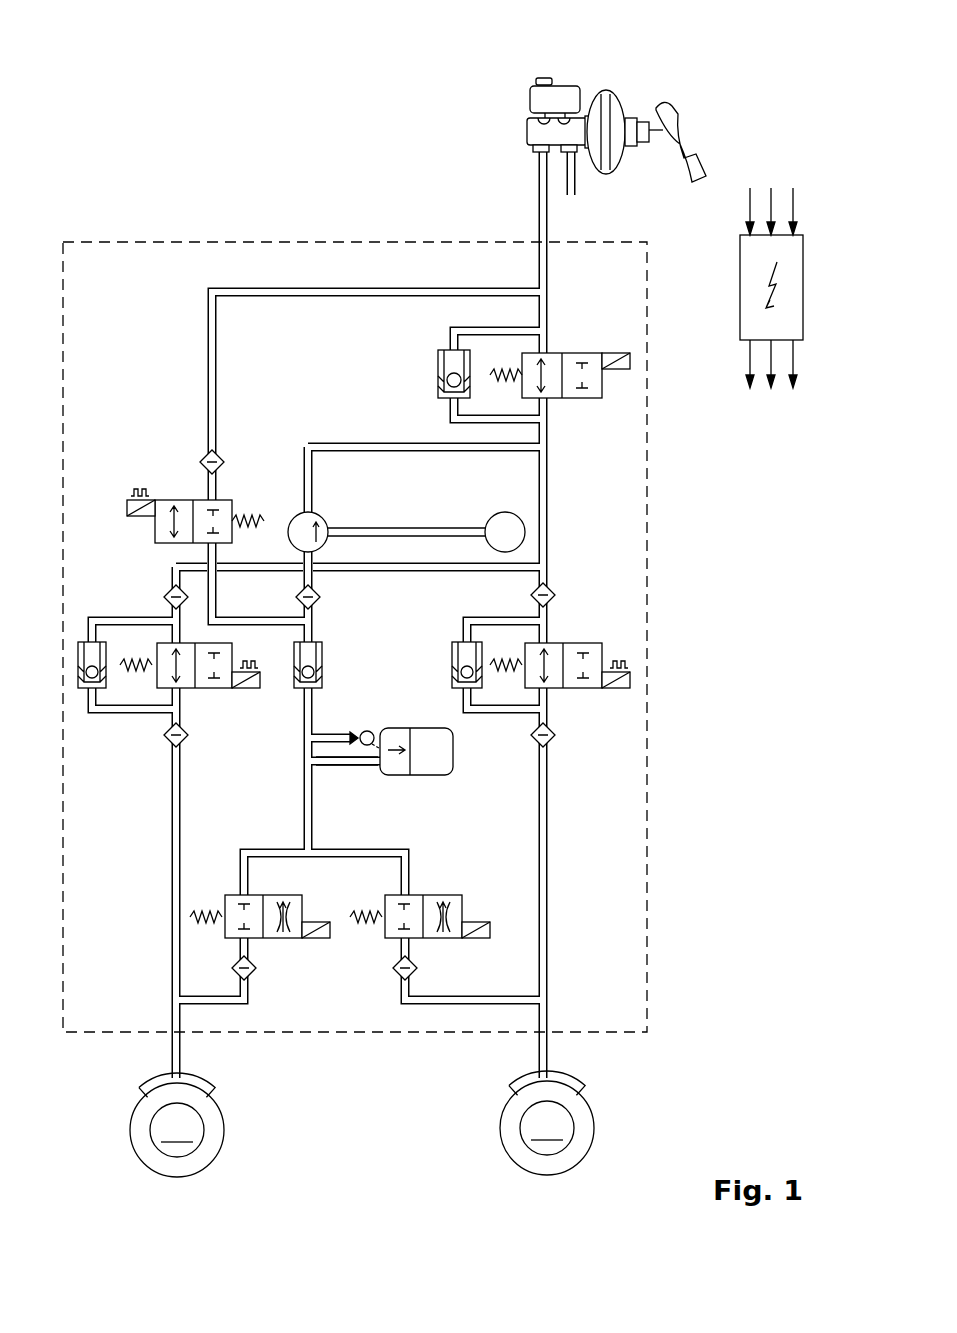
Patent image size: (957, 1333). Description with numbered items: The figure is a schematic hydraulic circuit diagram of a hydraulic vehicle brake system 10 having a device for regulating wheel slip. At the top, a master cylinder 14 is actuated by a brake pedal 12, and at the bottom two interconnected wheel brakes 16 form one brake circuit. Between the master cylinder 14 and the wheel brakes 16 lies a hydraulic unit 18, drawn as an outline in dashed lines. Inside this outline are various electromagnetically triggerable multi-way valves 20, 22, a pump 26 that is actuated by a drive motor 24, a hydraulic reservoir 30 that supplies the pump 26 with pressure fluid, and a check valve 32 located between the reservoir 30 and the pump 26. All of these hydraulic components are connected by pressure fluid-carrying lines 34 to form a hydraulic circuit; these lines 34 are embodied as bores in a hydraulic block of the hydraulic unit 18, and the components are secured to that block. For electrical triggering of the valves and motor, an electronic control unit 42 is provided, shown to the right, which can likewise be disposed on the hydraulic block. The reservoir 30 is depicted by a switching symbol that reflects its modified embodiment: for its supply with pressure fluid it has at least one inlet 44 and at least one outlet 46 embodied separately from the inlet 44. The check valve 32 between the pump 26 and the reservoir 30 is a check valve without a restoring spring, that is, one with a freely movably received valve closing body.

The hydraulic vehicle brake system 10 is at (272, 95).
The brake pedal 12 is at (668, 152).
The master cylinder 14 is at (540, 136).
The wheel brakes 16 is at (188, 1088).
The hydraulic unit 18 is at (191, 240).
The multi-way valve 20 is at (568, 399).
The multi-way valves 22 is at (166, 510).
The drive motor 24 is at (498, 514).
The pump 26 is at (320, 518).
The hydraulic reservoir 30 is at (430, 765).
The check valve 32 is at (325, 652).
The lines 34 is at (337, 297).
The electronic control unit 42 is at (795, 283).
The inlet 44 is at (340, 766).
The outlet 46 is at (326, 738).